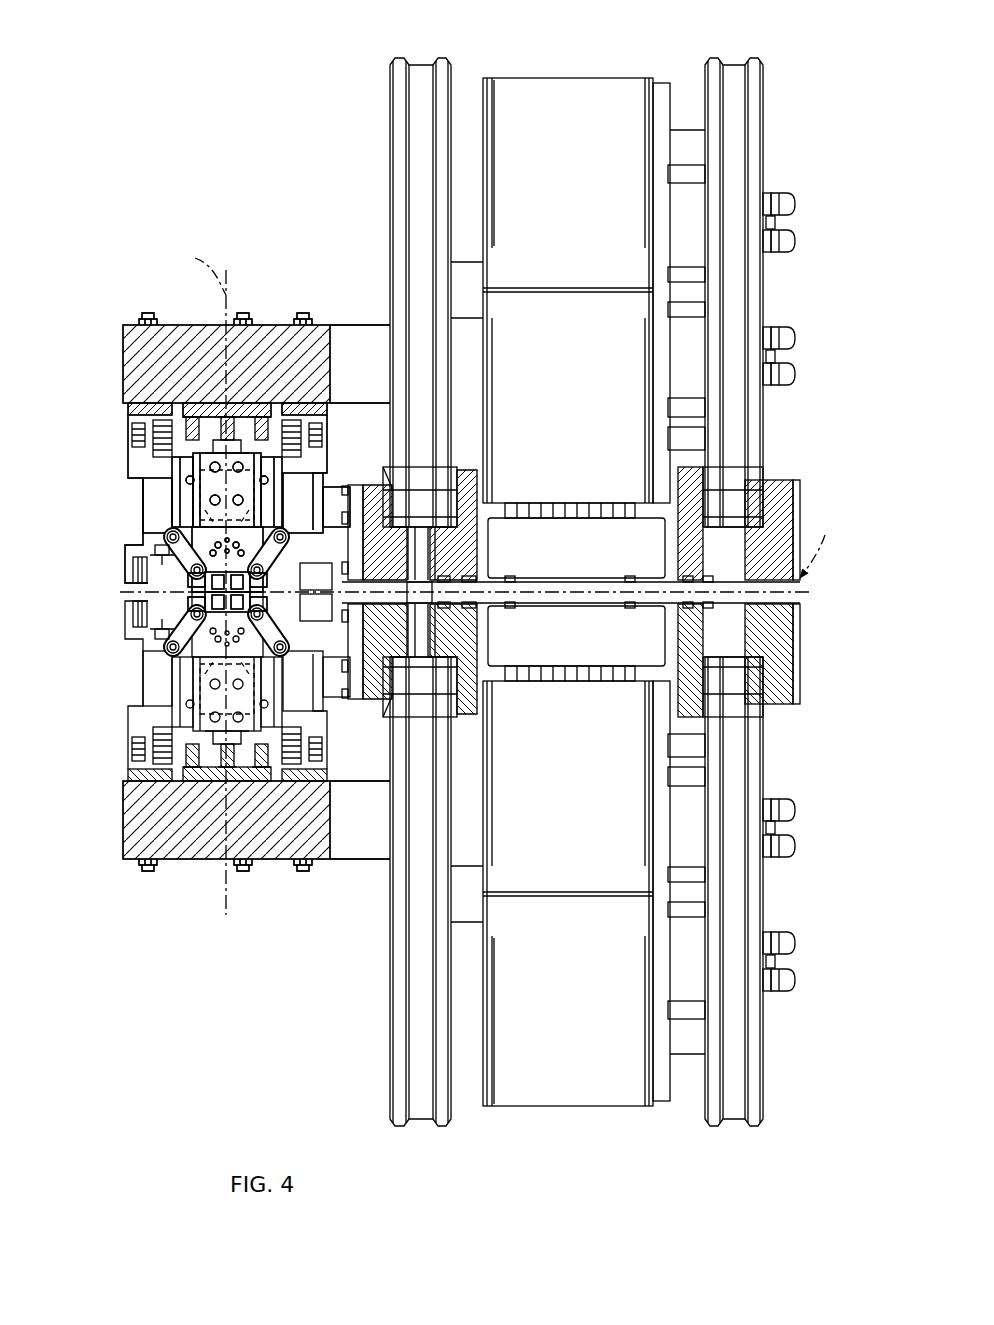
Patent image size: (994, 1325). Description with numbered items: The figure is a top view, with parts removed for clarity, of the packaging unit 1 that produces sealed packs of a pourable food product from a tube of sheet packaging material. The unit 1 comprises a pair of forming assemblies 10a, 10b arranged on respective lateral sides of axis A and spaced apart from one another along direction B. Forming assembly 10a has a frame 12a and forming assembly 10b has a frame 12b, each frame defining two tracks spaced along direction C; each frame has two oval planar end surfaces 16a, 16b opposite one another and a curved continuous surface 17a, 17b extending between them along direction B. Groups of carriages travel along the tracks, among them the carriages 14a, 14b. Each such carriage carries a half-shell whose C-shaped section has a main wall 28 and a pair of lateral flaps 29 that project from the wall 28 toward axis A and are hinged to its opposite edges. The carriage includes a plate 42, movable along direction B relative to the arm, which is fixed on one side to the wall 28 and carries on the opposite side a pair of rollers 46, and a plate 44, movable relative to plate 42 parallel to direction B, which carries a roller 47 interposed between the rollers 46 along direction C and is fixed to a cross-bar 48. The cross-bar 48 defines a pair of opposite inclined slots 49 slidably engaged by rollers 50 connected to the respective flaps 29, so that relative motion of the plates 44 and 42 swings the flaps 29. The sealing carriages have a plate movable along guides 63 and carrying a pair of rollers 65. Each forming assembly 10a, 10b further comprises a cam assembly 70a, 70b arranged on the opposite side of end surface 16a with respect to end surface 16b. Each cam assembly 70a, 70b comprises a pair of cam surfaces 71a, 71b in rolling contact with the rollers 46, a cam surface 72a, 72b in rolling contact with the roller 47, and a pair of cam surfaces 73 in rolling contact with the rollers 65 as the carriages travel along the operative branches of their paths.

The packaging unit 1 is at (128, 265).
The forming assembly 10a is at (780, 118).
The forming assembly 10b is at (797, 995).
The frame 12a is at (583, 110).
The frame 12b is at (606, 1073).
The carriage 14a is at (308, 282).
The carriage 14b is at (297, 880).
The end surface 16a is at (480, 95).
The end surface 16b is at (485, 1070).
The curved continuous surface 17a is at (537, 128).
The curved continuous surface 17b is at (548, 1030).
The main wall 28 is at (207, 570).
The lateral flaps 29 is at (212, 605).
The plate 42 is at (188, 482).
The plate 44 is at (283, 480).
The rollers 46 is at (192, 440).
The roller 47 is at (228, 417).
The cross-bar 48 is at (197, 540).
The slots 49 is at (163, 542).
The rollers 50 is at (178, 548).
The guides 63 is at (322, 712).
The rollers 65 is at (140, 428).
The cam assembly 70a is at (333, 323).
The cam assembly 70b is at (110, 862).
The cam surfaces 71a is at (178, 445).
The cam surfaces 71b is at (178, 735).
The cam surface 72a is at (240, 425).
The cam surface 72b is at (225, 790).
The cam surfaces 73 is at (135, 432).